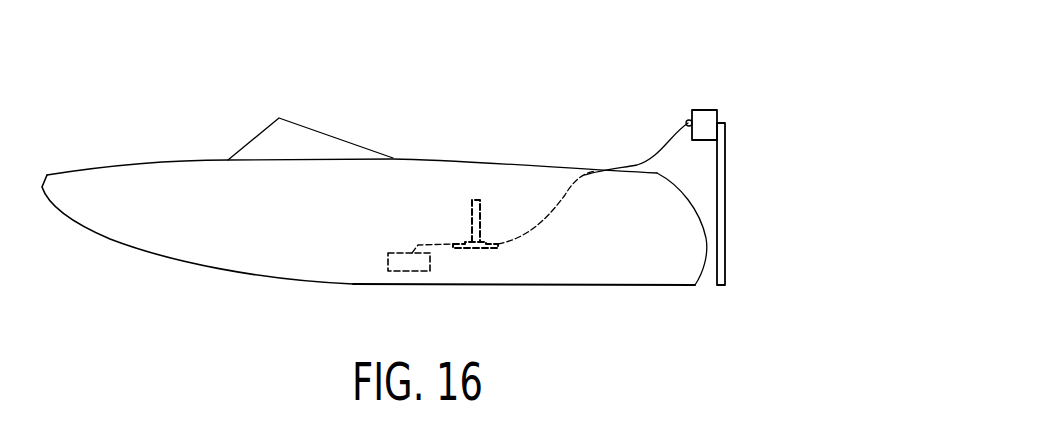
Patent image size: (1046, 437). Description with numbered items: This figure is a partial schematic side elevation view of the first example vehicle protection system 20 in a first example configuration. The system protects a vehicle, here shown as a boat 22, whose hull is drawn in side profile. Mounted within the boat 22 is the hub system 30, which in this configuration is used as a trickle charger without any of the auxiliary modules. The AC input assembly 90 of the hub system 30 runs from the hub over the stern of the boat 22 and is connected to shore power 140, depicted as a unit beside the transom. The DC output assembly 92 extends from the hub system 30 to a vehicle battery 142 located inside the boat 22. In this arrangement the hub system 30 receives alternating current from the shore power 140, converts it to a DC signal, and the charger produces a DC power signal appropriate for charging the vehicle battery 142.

The vehicle protection system 20 is at (385, 148).
The boat 22 is at (98, 164).
The hub system 30 is at (444, 223).
The AC input assembly 90 is at (632, 163).
The DC output assembly 92 is at (453, 247).
The shore power 140 is at (727, 121).
The vehicle battery 142 is at (386, 272).